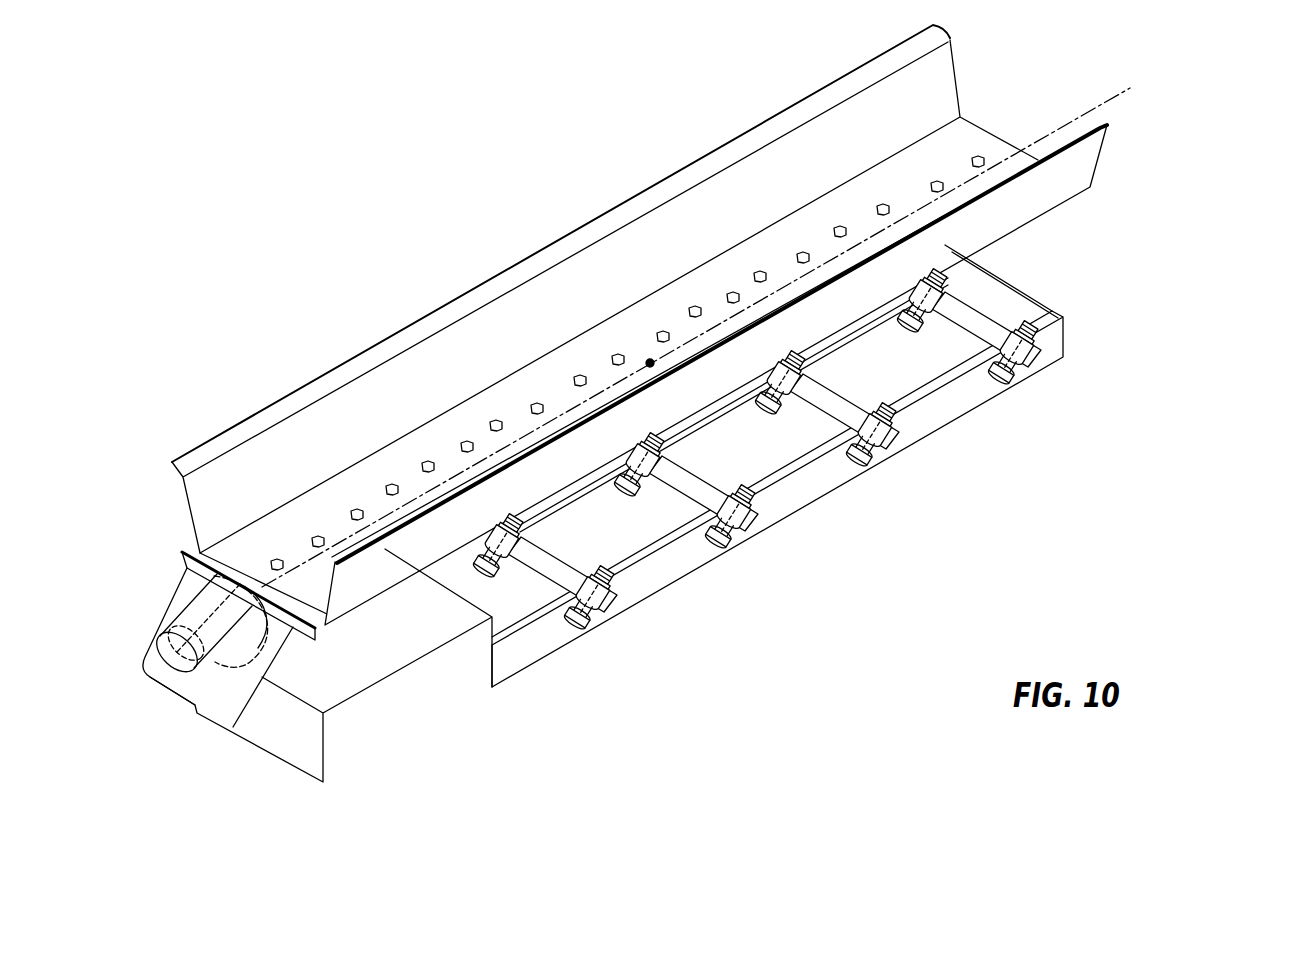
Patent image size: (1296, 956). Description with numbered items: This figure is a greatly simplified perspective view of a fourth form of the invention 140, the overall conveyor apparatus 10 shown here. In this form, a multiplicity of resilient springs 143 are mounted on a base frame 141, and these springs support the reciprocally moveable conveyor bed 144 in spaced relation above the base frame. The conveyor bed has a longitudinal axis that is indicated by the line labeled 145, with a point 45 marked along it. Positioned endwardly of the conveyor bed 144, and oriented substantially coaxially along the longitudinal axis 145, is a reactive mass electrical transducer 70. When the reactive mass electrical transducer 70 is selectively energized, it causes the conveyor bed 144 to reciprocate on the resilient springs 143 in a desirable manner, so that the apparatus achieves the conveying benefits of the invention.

The vibratory feeder apparatus 10 is at (435, 145).
The fourth form of the invention 140 is at (342, 338).
The base frame 141 is at (920, 423).
The resilient springs 143 is at (543, 565).
The reciprocally moveable conveyor bed 144 is at (972, 152).
The longitudinal axis 145 is at (1113, 100).
The axis point 45 is at (650, 358).
The reactive mass electrical transducer 70 is at (171, 667).